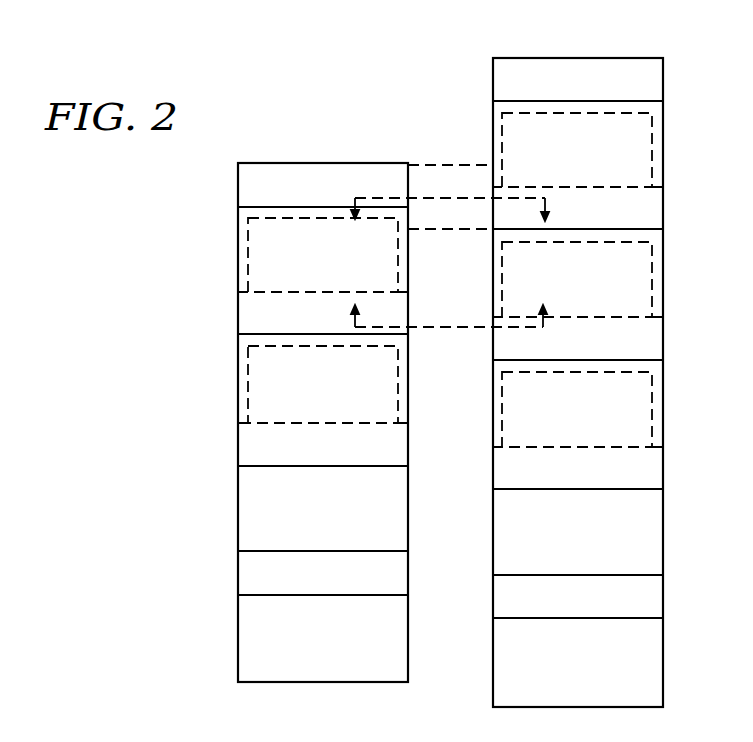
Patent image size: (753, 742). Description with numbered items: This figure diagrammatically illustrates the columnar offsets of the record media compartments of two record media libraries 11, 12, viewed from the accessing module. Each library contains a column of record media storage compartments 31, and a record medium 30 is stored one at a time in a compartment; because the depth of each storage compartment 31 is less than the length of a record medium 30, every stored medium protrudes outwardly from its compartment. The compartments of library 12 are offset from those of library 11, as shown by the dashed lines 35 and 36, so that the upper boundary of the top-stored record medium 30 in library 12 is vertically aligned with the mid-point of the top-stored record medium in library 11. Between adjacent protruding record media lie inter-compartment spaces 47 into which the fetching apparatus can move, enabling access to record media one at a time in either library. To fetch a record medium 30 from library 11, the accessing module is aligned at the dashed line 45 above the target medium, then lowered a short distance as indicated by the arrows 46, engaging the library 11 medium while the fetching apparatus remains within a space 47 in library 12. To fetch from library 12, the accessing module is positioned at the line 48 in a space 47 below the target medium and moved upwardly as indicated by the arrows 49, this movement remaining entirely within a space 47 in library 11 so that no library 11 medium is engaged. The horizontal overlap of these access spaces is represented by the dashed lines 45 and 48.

The record media library 11 is at (323, 407).
The record media library 12 is at (578, 367).
The record medium 30 is at (311, 272).
The record media storage compartment 31 is at (311, 520).
The dashed line 35 is at (424, 165).
The dashed line 36 is at (447, 229).
The dashed line 45 is at (440, 197).
The arrows 46 is at (353, 199).
The space 47 is at (257, 325).
The line 48 is at (440, 327).
The arrows 49 is at (352, 316).